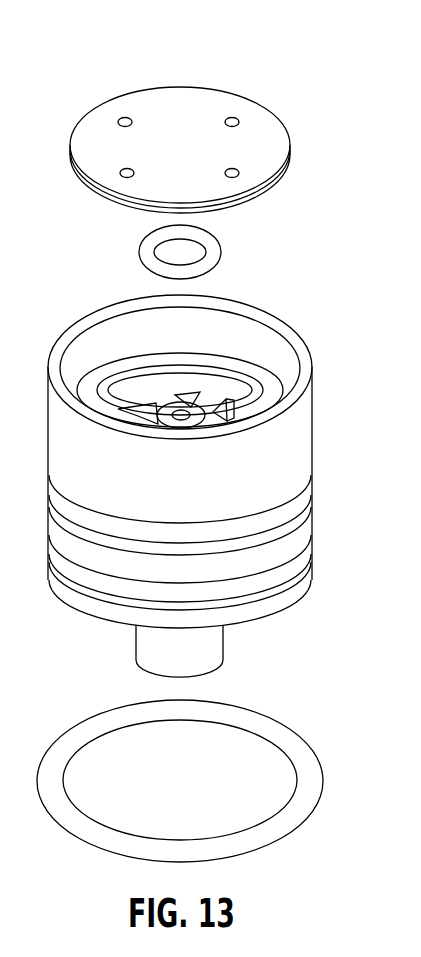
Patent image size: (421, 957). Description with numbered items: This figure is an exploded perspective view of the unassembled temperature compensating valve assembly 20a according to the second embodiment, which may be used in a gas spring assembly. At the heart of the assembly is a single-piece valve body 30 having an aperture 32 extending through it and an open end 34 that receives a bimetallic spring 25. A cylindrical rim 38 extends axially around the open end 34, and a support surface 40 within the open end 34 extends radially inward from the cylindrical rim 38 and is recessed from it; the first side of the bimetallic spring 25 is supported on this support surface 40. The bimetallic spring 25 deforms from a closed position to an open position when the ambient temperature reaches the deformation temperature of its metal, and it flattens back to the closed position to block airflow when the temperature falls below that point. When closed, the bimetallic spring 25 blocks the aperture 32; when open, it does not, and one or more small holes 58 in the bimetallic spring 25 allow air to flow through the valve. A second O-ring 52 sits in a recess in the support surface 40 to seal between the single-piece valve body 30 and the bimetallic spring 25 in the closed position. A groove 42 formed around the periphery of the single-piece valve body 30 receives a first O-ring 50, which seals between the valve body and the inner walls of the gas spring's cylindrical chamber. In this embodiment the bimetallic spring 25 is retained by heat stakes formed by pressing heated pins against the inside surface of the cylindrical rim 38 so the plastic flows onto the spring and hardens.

The temperature compensating valve assembly 20a is at (312, 28).
The bimetallic spring 25 is at (205, 102).
The small holes 58 is at (123, 169).
The second O-ring 52 is at (212, 243).
The open end 34 is at (241, 332).
The cylindrical rim 38 is at (280, 332).
The support surface 40 is at (103, 377).
The aperture 32 is at (180, 412).
The groove 42 is at (297, 500).
The single-piece valve body 30 is at (298, 577).
The first O-ring 50 is at (307, 760).